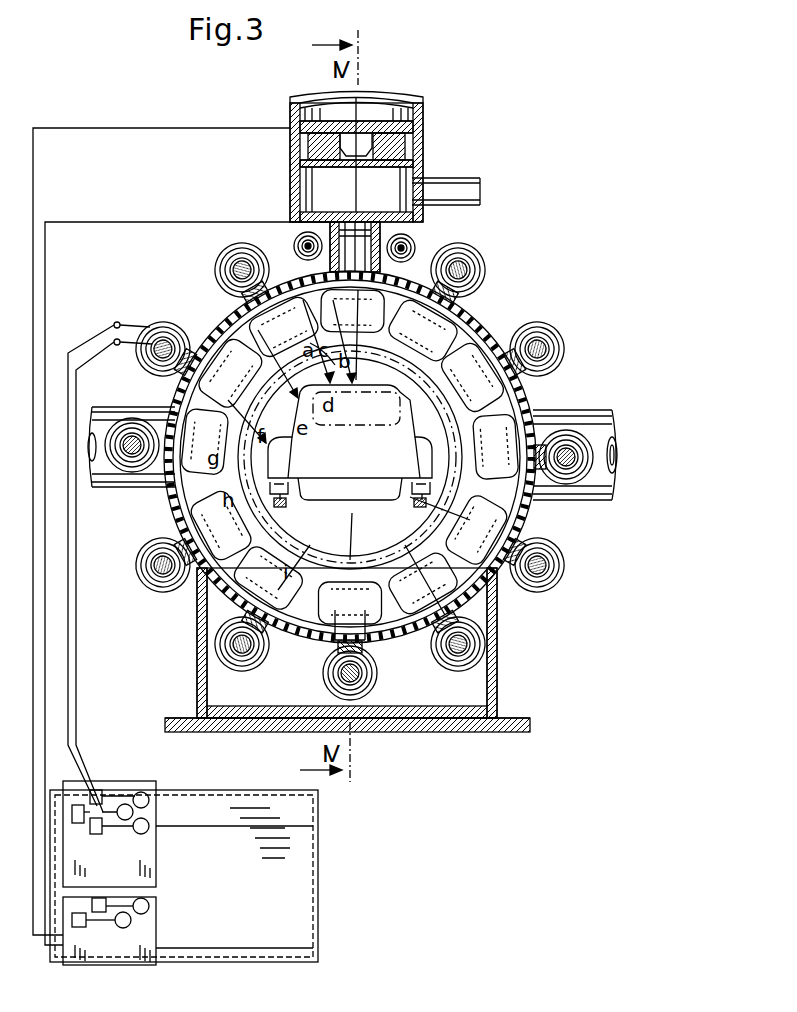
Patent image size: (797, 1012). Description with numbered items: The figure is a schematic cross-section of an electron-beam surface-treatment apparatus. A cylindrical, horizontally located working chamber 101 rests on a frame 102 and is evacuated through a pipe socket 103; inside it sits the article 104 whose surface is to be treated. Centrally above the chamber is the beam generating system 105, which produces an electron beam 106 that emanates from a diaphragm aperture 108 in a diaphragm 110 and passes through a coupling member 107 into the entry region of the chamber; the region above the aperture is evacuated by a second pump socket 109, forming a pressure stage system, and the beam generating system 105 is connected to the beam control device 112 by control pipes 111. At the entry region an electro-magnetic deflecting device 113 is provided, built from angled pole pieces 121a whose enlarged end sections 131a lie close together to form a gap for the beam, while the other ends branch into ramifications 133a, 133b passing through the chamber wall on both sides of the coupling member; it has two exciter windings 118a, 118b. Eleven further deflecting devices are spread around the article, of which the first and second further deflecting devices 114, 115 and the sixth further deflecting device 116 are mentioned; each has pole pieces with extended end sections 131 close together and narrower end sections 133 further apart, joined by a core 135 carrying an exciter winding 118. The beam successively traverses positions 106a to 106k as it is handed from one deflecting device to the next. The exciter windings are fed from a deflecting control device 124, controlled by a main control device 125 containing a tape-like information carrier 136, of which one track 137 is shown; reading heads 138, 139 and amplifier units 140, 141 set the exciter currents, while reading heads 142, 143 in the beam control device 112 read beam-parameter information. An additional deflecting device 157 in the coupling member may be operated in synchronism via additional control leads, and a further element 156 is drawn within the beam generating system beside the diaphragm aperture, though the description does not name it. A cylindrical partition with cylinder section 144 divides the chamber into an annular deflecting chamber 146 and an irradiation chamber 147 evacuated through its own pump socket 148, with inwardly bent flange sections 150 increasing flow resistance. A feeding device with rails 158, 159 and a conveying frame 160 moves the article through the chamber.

The working chamber 101 is at (526, 388).
The frame 102 is at (497, 682).
The pipe socket 103 is at (595, 410).
The article 104 is at (363, 473).
The beam generating system 105 is at (435, 132).
The electron beam 106 is at (360, 103).
The beam position 106a is at (340, 368).
The beam position 106k is at (342, 512).
The coupling member 107 is at (415, 242).
The diaphragm aperture 108 is at (355, 212).
The second pump socket 109 is at (465, 178).
The diaphragm 110 is at (300, 185).
The control pipes 111 is at (112, 128).
The beam control device 112 is at (150, 968).
The deflecting device 113 is at (262, 238).
The first further deflecting device 114 is at (208, 250).
The second further deflecting device 115 is at (162, 370).
The sixth further deflecting device 116 is at (372, 670).
The exciter winding 118 is at (332, 685).
The exciter winding 118a is at (292, 230).
The exciter winding 118b is at (455, 252).
The angled pole piece 121a is at (393, 310).
The deflecting control device 124 is at (128, 780).
The main control device 125 is at (222, 790).
The extended end section 131 is at (375, 615).
The enlarged end section 131a is at (448, 405).
The narrower end section 133 is at (320, 650).
The ramification 133a is at (250, 284).
The ramification 133b is at (460, 292).
The core 135 is at (345, 665).
The information carrier 136 is at (300, 792).
The track 137 is at (318, 832).
The reading head 138 is at (168, 800).
The reading head 139 is at (149, 792).
The amplifier unit 140 is at (96, 788).
The amplifier unit 141 is at (96, 834).
The reading head 142 is at (150, 905).
The reading head 143 is at (132, 922).
The cylinder section 144 is at (478, 372).
The deflecting chamber 146 is at (525, 418).
The irradiation chamber 147 is at (488, 338).
The pump socket 148 is at (120, 498).
The flange section 150 is at (470, 450).
The valve 156 is at (372, 212).
The additional deflecting device 157 is at (70, 225).
The rail 158 is at (282, 510).
The rail 159 is at (420, 520).
The conveying frame 160 is at (438, 530).